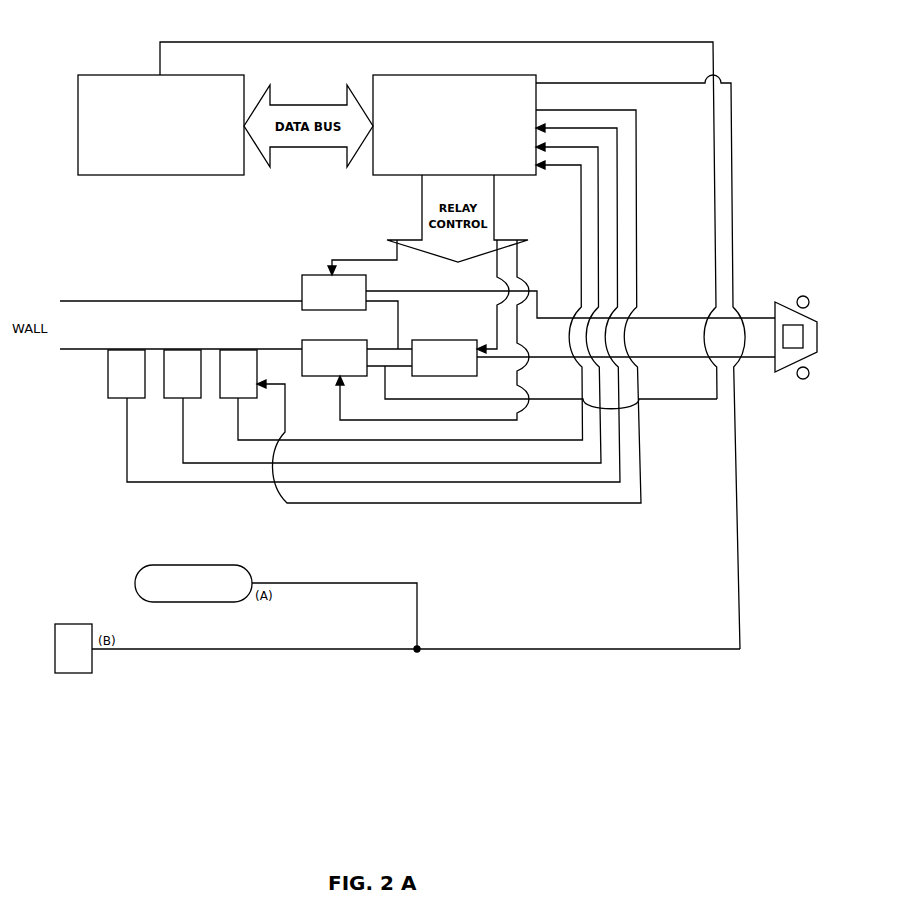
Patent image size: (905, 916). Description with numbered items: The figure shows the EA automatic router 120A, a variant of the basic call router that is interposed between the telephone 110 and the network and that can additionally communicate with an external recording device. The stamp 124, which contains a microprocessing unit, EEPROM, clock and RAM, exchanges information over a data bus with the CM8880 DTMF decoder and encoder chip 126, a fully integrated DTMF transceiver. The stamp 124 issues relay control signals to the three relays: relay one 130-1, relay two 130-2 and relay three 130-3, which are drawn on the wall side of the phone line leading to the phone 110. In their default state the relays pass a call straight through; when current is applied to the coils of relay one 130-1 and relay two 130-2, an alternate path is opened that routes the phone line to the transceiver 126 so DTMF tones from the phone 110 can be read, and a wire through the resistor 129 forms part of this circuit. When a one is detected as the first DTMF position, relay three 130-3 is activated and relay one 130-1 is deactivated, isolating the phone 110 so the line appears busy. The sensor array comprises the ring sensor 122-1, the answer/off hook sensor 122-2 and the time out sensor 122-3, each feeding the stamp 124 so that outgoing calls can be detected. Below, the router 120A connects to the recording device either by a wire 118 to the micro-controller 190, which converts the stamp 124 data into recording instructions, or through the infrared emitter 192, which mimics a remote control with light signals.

The phone 110 is at (778, 373).
The wire 118 is at (740, 649).
The automatic router 120A is at (277, 660).
The ring sensor 122-1 is at (108, 382).
The answer/off hook sensor 122-2 is at (117, 405).
The time out sensor 122-3 is at (145, 414).
The stamp 124 is at (539, 81).
The DTMF decoder and encoder chip 126 is at (79, 85).
The resistor 129 is at (392, 305).
The relay 1 130-1 is at (277, 292).
The relay 2 130-2 is at (332, 301).
The relay 3 130-3 is at (301, 274).
The microprocessor 190 is at (206, 565).
The infrared emitter 192 is at (72, 622).